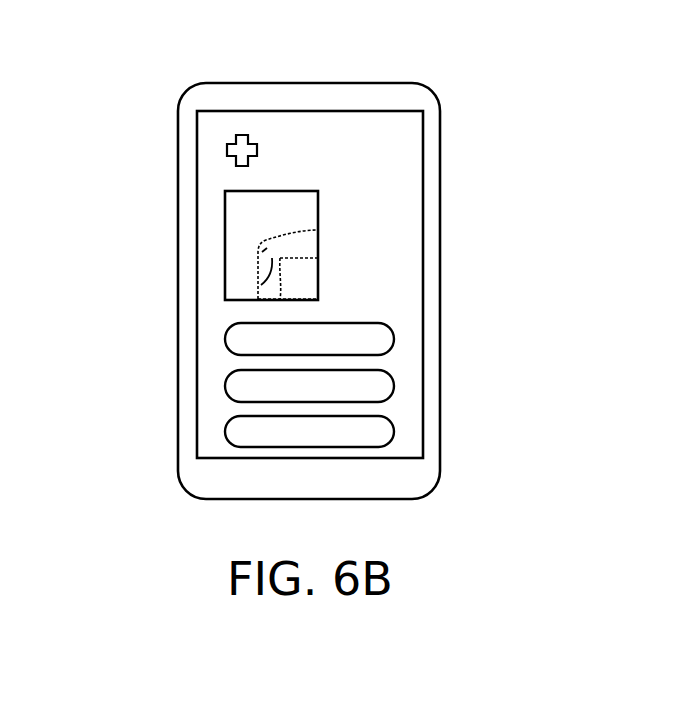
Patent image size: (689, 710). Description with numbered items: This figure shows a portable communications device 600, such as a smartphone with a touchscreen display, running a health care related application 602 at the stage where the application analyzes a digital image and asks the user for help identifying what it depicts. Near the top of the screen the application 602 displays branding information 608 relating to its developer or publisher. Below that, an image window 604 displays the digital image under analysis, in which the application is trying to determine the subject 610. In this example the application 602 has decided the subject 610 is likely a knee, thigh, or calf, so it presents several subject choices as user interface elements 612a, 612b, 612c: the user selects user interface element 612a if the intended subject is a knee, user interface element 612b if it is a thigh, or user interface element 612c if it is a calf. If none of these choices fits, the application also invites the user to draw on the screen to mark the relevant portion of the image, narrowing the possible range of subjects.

The portable communications device 600 is at (178, 121).
The application 602 is at (197, 200).
The image window 604 is at (225, 249).
The branding information 608 is at (387, 151).
The subject 610 is at (261, 285).
The user interface element 612a is at (394, 339).
The user interface element 612b is at (394, 386).
The user interface element 612c is at (394, 431).